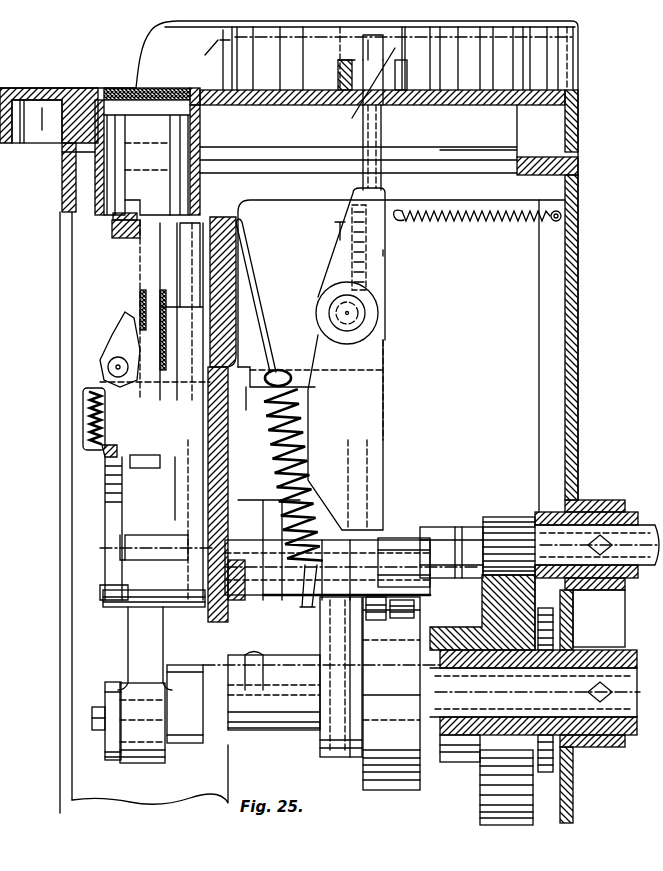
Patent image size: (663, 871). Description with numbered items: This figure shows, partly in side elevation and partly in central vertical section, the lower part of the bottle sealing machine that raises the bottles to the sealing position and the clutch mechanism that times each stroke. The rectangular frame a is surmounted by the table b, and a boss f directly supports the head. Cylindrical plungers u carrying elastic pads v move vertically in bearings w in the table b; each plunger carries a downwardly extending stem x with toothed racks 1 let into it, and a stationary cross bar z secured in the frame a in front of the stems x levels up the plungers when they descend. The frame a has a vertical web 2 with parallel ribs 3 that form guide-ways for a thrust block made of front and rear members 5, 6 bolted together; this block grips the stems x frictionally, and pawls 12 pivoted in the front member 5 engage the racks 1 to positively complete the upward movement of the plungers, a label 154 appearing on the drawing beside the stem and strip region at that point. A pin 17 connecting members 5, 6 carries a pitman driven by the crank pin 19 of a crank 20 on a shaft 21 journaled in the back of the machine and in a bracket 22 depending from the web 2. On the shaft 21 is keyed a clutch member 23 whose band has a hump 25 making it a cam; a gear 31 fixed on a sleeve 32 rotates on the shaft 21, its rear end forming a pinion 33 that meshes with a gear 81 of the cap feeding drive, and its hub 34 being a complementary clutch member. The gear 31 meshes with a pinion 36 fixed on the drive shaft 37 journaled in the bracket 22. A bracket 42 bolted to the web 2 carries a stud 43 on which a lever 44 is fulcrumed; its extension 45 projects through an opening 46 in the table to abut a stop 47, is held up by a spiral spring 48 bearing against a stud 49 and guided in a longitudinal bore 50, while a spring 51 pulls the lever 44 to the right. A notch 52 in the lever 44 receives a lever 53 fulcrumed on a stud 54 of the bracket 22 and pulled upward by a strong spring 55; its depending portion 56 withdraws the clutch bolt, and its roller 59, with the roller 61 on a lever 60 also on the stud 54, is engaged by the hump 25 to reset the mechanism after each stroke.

The frame a is at (579, 415).
The table b is at (45, 88).
The boss f is at (213, 47).
The elastic pads v is at (158, 88).
The bearings w is at (196, 88).
The cylindrical plungers u is at (199, 193).
The cross bar z is at (112, 232).
The stems x is at (150, 243).
The slide 154 is at (185, 268).
The toothed racks 1 is at (138, 300).
The pawls 12 is at (122, 345).
The vertical web 2 is at (232, 350).
The vertical parallel ribs 3 is at (242, 268).
The bracket 42 is at (286, 370).
The spring 55 is at (310, 466).
The lever 44 is at (386, 280).
The stud 43 is at (362, 318).
The spiral spring 48 is at (350, 268).
The stud 49 is at (338, 228).
The longitudinal bore 50 is at (386, 253).
The spring 51 is at (484, 228).
The extension 45 is at (383, 140).
The opening 46 is at (358, 91).
The stop 47 is at (338, 72).
The front member of thrust block 5 is at (122, 508).
The rear member of thrust block 6 is at (186, 510).
The pin 17 is at (105, 576).
The crank pin 19 is at (118, 758).
The crank 20 is at (193, 745).
The bracket 22 is at (283, 720).
The depending portion 56 is at (320, 708).
The lever 53 is at (322, 600).
The notch 52 is at (348, 545).
The lever 60 is at (395, 535).
The drive shaft 37 is at (428, 528).
The stud 54 is at (470, 540).
The pinion 36 is at (505, 517).
The pinion 33 is at (583, 650).
The shaft 21 is at (535, 692).
The gear 81 is at (546, 608).
The sleeve 32 is at (455, 660).
The gear 31 is at (480, 812).
The hub 34 is at (442, 770).
The hump 25 is at (395, 790).
The clutch member 23 is at (352, 757).
The anti-friction roller 59 is at (378, 620).
The anti-friction roller 61 is at (410, 618).